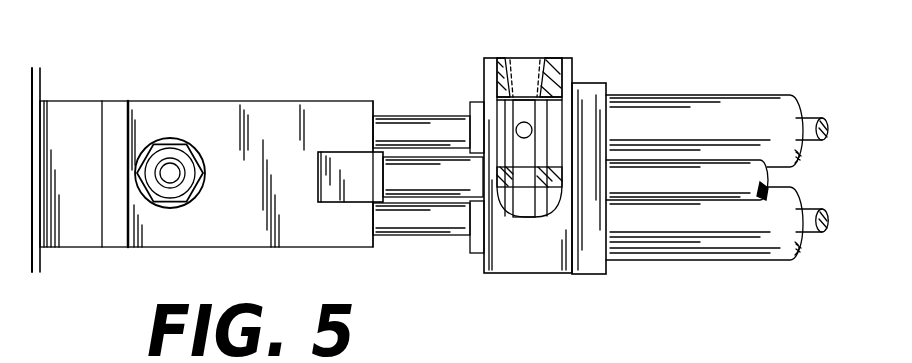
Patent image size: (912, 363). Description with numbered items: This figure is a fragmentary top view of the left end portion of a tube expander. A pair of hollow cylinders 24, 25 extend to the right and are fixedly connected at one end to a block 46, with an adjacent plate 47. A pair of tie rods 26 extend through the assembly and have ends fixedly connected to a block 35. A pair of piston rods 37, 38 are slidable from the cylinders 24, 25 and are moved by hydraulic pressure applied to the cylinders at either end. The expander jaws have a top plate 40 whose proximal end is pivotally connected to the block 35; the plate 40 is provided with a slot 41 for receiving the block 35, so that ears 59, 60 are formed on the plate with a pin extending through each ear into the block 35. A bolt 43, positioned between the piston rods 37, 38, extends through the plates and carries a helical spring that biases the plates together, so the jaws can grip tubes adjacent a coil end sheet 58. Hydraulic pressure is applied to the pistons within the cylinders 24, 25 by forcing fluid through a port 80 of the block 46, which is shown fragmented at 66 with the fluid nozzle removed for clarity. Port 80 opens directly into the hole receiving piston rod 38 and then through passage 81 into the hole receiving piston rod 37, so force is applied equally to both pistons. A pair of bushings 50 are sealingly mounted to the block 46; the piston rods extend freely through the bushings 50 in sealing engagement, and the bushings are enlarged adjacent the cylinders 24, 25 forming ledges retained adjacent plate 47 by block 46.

The hollow cylinder 24 is at (720, 259).
The hollow cylinder 25 is at (718, 98).
The tie rod 26 is at (403, 157).
The block 35 is at (357, 193).
The piston rod 37 is at (452, 229).
The piston rod 38 is at (406, 118).
The top plate 40 is at (255, 248).
The slot 41 is at (318, 167).
The bolt 43 is at (172, 172).
The block 46 is at (537, 275).
The plate 47 is at (587, 275).
The bushing 50 is at (472, 103).
The coil end sheet 58 is at (40, 87).
The ear 59 is at (342, 238).
The ear 60 is at (327, 103).
The fragmented portion of block 66 is at (558, 113).
The port 80 is at (535, 36).
The passage 81 is at (520, 184).